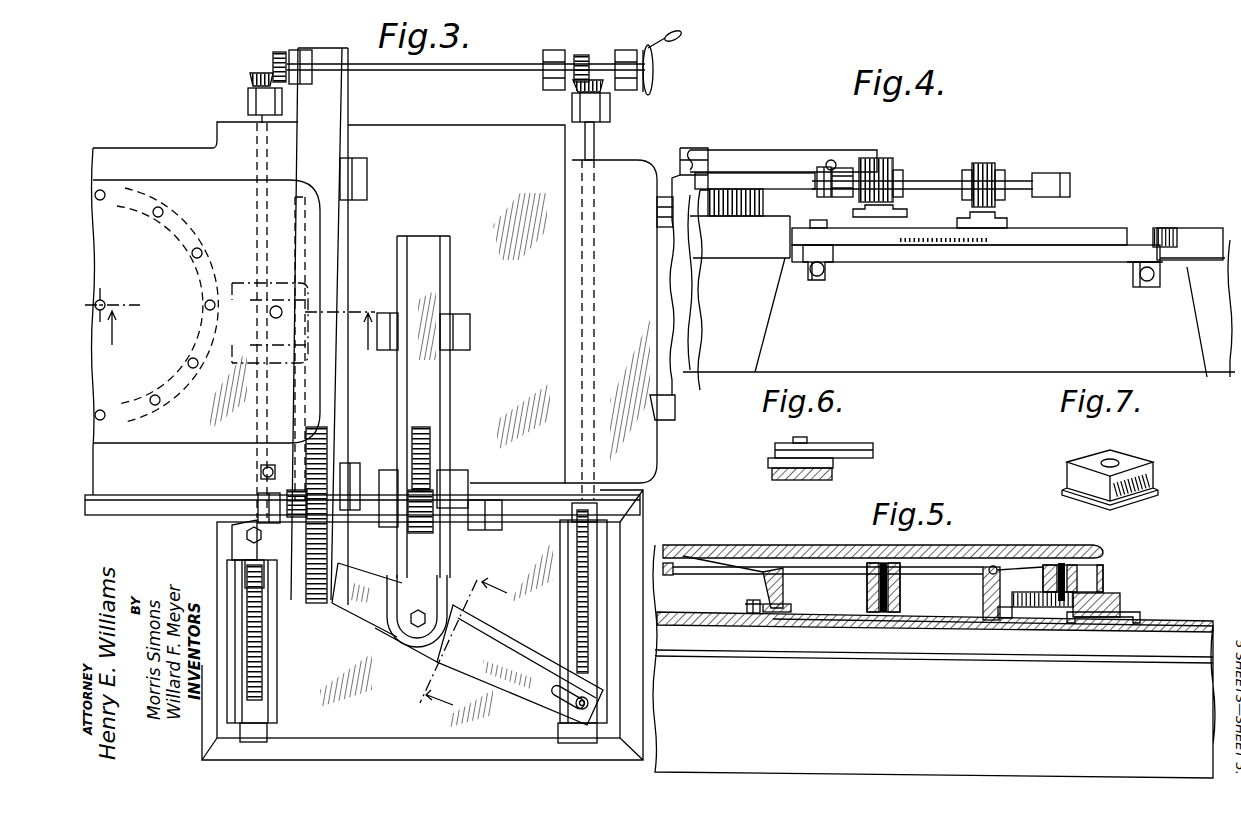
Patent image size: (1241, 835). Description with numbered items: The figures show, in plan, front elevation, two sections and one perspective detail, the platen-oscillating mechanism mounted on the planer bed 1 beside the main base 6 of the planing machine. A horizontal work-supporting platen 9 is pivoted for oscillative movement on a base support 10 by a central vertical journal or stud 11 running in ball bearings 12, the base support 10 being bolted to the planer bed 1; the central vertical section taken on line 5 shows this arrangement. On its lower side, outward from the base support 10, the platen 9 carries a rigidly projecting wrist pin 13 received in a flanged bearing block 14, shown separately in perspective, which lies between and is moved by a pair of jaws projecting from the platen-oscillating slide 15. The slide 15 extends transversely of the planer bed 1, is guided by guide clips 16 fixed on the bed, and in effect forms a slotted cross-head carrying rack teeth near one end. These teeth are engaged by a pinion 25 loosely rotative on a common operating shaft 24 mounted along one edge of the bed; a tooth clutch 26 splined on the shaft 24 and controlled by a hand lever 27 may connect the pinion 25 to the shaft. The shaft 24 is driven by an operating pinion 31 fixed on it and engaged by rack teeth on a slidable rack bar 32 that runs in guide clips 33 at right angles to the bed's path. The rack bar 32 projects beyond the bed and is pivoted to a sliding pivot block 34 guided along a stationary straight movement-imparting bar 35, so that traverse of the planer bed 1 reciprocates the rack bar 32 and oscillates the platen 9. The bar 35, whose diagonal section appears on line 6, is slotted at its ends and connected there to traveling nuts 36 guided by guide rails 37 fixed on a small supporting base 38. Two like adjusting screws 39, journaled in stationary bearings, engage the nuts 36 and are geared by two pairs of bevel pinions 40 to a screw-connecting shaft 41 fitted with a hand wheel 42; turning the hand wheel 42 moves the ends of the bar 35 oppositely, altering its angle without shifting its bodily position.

In FIG. 3, the planer bed 1 is at (383, 311).
In FIG. 4, the planer bed 1 is at (753, 240).
In FIG. 5, the planer bed 1 is at (816, 632).
In FIG. 3, the section line 5— 5 is at (241, 333).
In FIG. 3, the main base 6 is at (684, 408).
In FIG. 4, the main base 6 is at (959, 286).
In FIG. 5, the main base 6 is at (934, 661).
In FIG. 3, the work-supporting table or platen 9 is at (206, 311).
In FIG. 4, the work-supporting table or platen 9 is at (773, 158).
In FIG. 5, the work-supporting table or platen 9 is at (960, 547).
In FIG. 4, the base support 10 is at (710, 207).
In FIG. 5, the base support 10 is at (930, 633).
In FIG. 3, the central vertical journal or stud 11 is at (112, 300).
In FIG. 5, the central vertical journal or stud 11 is at (878, 615).
In FIG. 5, the ball bearings 12 is at (1003, 565).
In FIG. 3, the crank pin or wrist pin 13 is at (208, 318).
In FIG. 5, the crank pin or wrist pin 13 is at (1077, 552).
In FIG. 3, the flanged bearing block 14 is at (289, 304).
In FIG. 7, the flanged bearing block 14 is at (1135, 487).
In FIG. 5, the flanged bearing block 14 is at (1093, 573).
In FIG. 3, the platen-oscillating slide 15 is at (346, 262).
In FIG. 4, the platen-oscillating slide 15 is at (897, 175).
In FIG. 5, the platen-oscillating slide 15 is at (1110, 597).
In FIG. 3, the guide clips 16 is at (349, 184).
In FIG. 4, the guide clips 16 is at (908, 207).
In FIG. 5, the guide clips 16 is at (1125, 615).
In FIG. 3, the operating shaft 24 is at (112, 516).
In FIG. 4, the operating shaft 24 is at (715, 175).
In FIG. 3, the pinion 25 is at (328, 537).
In FIG. 4, the pinion 25 is at (886, 158).
In FIG. 3, the tooth clutch 26 is at (262, 474).
In FIG. 4, the tooth clutch 26 is at (846, 166).
In FIG. 3, the hand lever 27 is at (235, 556).
In FIG. 4, the hand lever 27 is at (828, 160).
In FIG. 3, the operating pinion 31 is at (431, 470).
In FIG. 4, the operating pinion 31 is at (988, 165).
In FIG. 3, the slidable rack bar 32 is at (432, 556).
In FIG. 4, the slidable rack bar 32 is at (1010, 220).
In FIG. 6, the slidable rack bar 32 is at (850, 452).
In FIG. 3, the guide clips 33 is at (470, 336).
In FIG. 4, the guide clips 33 is at (963, 225).
In FIG. 3, the sliding pivot block 34 is at (389, 636).
In FIG. 4, the sliding pivot block 34 is at (950, 232).
In FIG. 6, the sliding pivot block 34 is at (825, 470).
In FIG. 3, the movement-imparting bar 35 is at (467, 644).
In FIG. 4, the movement-imparting bar 35 is at (1052, 248).
In FIG. 6, the movement-imparting bar 35 is at (792, 481).
In FIG. 3, the traveling nut 36 is at (247, 572).
In FIG. 4, the traveling nut 36 is at (827, 272).
In FIG. 4, the guide rail 37 is at (837, 261).
In FIG. 3, the small supporting base 38 is at (367, 735).
In FIG. 4, the small supporting base 38 is at (959, 304).
In FIG. 3, the adjusting screws 39 is at (596, 152).
In FIG. 4, the adjusting screws 39 is at (820, 274).
In FIG. 3, the bevel pinions 40 is at (272, 60).
In FIG. 3, the screw-connecting and screw-operating shaft 41 is at (458, 72).
In FIG. 3, the hand wheel 42 is at (660, 50).